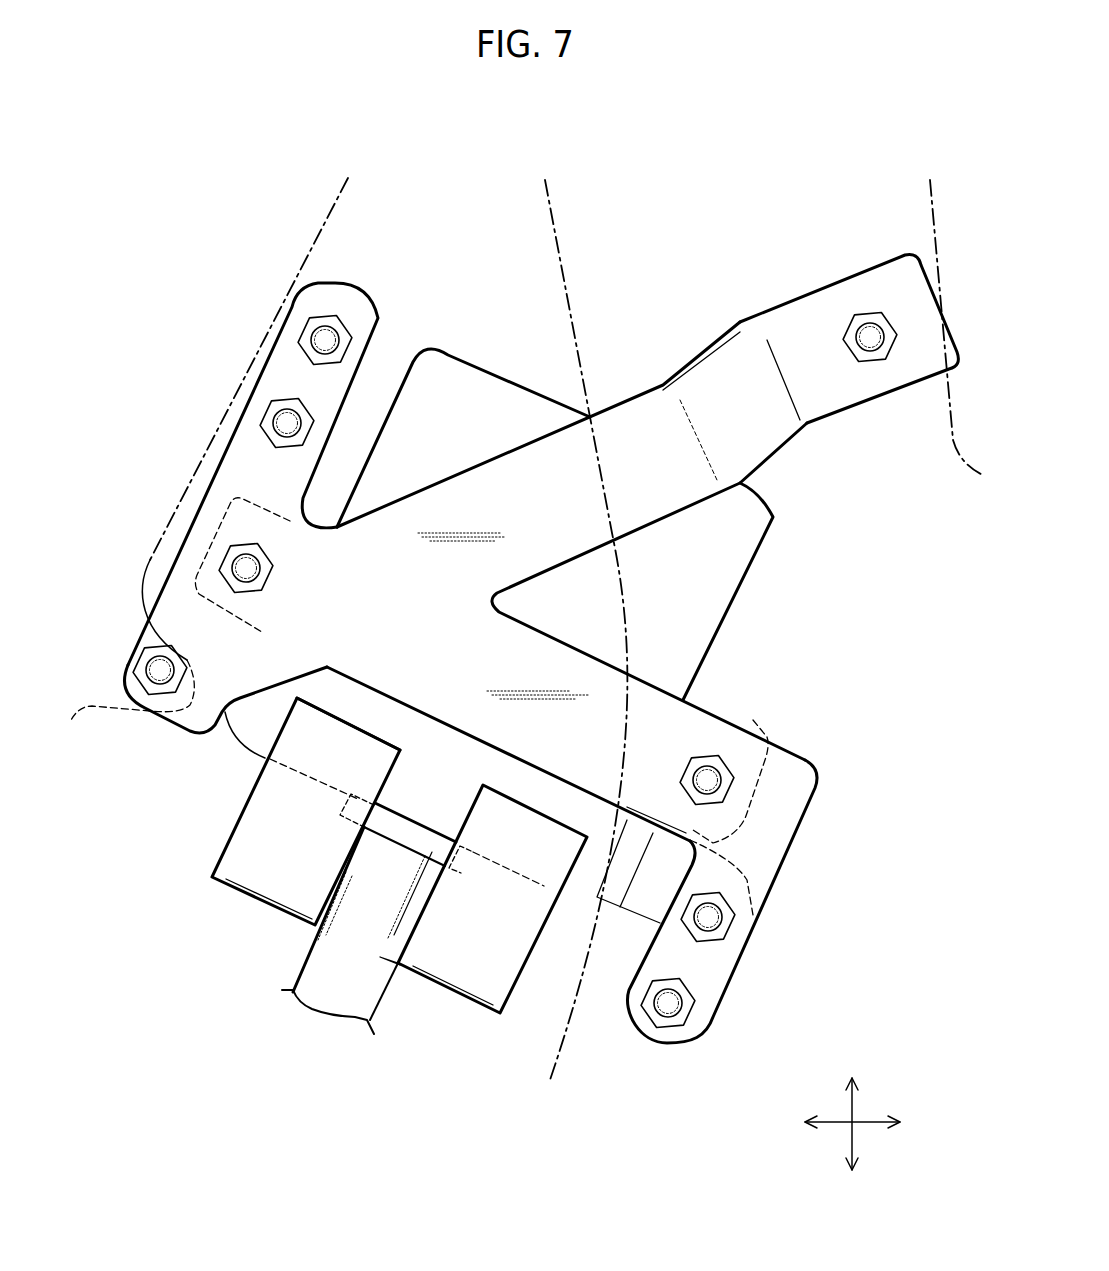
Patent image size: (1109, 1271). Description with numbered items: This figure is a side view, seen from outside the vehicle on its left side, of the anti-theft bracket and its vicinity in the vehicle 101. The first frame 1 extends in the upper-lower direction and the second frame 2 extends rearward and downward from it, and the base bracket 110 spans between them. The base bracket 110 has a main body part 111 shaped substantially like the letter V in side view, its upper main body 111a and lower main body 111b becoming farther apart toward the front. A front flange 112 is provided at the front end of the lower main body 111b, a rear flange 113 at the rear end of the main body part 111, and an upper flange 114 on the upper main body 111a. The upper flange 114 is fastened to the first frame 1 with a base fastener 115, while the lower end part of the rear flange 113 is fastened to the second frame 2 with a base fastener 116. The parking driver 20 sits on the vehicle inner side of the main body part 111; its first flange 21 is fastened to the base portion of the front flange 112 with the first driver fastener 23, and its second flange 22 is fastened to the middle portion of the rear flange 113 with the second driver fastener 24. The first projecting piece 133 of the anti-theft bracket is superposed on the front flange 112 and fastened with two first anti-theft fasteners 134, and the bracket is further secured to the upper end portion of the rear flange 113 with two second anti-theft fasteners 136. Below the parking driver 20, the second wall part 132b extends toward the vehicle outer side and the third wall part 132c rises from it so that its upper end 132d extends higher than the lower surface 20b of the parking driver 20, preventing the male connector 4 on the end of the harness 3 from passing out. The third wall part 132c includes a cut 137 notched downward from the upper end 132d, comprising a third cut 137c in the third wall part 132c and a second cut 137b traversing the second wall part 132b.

The vehicle 101 is at (741, 172).
The first frame 1 is at (560, 240).
The second frame 2 is at (317, 248).
The base bracket 110 is at (631, 383).
The main body part 111 is at (593, 503).
The upper main body 111a is at (503, 493).
The lower main body 111b is at (562, 663).
The front flange 112 is at (770, 815).
The rear flange 113 is at (253, 457).
The upper flange 114 is at (817, 337).
The base fastener 115 is at (877, 320).
The base fastener 116 is at (167, 688).
The second anti-theft fasteners 136 is at (307, 335).
The first anti-theft fasteners 134 is at (708, 933).
The parking driver 20 is at (767, 570).
The lower surface 20b is at (500, 870).
The first flange 21 is at (753, 793).
The second flange 22 is at (172, 530).
The first driver fastener 23 is at (707, 765).
The second driver fastener 24 is at (228, 580).
The second wall part 132b is at (232, 896).
The third wall part 132c is at (283, 827).
The upper end 132d is at (347, 742).
The first projecting piece 133 is at (753, 873).
The cut 137 is at (441, 772).
The second cut 137b is at (378, 965).
The third cut 137c is at (398, 925).
The harness 3 is at (323, 973).
The male connector 4 is at (397, 830).